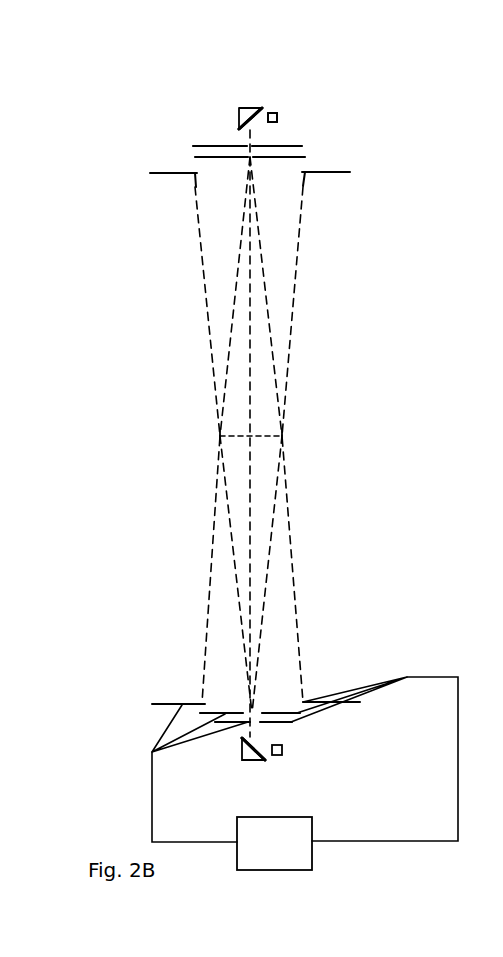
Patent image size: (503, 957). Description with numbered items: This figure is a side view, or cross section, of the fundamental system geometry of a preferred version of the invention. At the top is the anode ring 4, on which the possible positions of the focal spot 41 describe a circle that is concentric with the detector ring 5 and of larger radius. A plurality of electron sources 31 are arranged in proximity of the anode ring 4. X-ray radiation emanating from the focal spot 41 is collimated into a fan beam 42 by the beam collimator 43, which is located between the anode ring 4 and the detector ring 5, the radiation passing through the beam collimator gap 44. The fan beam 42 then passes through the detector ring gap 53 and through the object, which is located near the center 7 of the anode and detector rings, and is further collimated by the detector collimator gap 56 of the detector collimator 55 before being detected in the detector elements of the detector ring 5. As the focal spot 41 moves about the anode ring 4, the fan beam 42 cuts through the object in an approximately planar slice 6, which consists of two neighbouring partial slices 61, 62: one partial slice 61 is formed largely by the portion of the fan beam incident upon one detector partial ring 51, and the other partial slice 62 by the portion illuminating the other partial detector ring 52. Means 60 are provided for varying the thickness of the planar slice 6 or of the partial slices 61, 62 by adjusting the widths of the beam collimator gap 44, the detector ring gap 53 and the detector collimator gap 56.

The anode ring 4 is at (240, 108).
The focal spot 41 is at (248, 143).
The electron source 31 is at (277, 113).
The beam collimator gap 44 is at (250, 147).
The beam collimator 43 is at (198, 146).
The detector partial ring 51 is at (305, 155).
The partial detector ring 52 is at (200, 158).
The detector collimator 55 is at (177, 174).
The detector ring gap 53 is at (253, 158).
The fan beam 42 is at (205, 293).
The partial slice 61 is at (270, 330).
The partial slice 62 is at (238, 516).
The planar slice 6 is at (252, 465).
The center 7 is at (280, 435).
The detector collimator gap 56 is at (303, 702).
The detector ring 5 is at (257, 722).
The means for varying slice thickness 60 is at (305, 773).